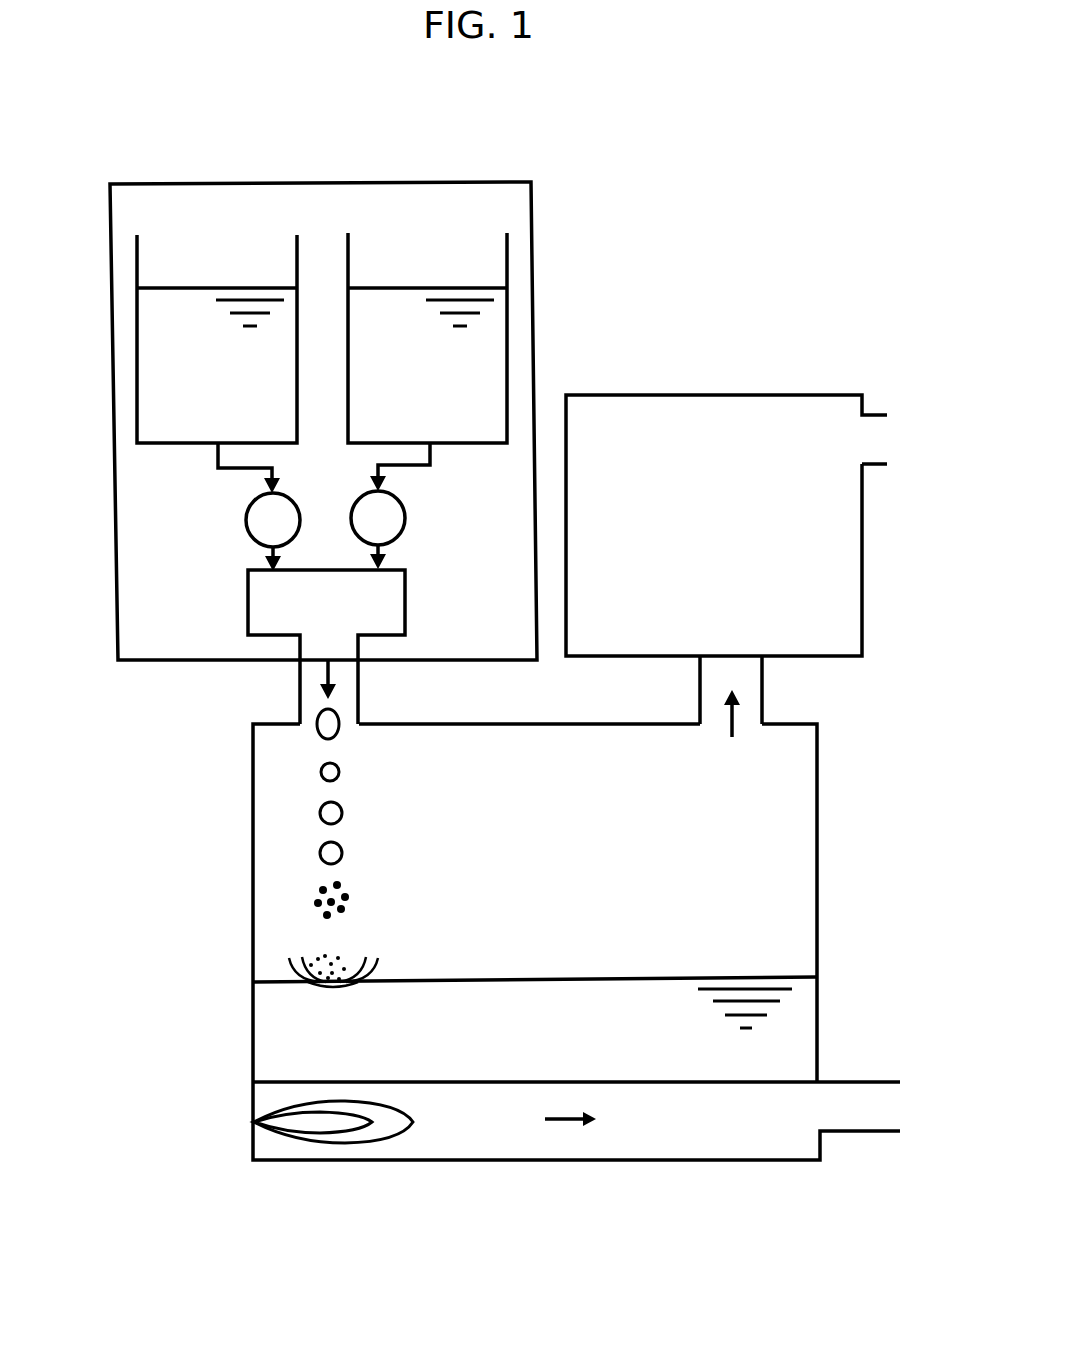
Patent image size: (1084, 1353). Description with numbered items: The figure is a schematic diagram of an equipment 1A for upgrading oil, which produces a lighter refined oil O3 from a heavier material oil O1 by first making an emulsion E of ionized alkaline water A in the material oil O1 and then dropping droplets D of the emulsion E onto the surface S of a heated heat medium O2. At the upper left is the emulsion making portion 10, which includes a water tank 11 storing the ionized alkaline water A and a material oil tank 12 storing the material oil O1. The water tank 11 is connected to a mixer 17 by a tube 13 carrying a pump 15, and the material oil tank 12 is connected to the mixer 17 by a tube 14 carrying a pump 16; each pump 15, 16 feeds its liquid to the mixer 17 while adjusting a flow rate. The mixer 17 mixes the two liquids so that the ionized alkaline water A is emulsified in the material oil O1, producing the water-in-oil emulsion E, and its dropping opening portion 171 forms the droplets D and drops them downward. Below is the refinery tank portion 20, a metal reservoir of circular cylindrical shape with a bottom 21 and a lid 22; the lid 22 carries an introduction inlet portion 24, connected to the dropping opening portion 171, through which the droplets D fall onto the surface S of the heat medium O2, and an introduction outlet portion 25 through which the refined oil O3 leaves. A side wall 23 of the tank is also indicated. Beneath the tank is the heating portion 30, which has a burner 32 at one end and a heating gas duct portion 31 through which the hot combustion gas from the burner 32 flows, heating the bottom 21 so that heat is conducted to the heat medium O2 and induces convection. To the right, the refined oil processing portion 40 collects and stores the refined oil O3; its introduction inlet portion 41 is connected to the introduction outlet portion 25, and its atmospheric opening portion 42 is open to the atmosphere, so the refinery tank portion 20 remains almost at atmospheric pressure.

The equipment for upgrading oil 1A is at (738, 137).
The emulsion making portion 10 is at (465, 181).
The water tank 11 is at (135, 268).
The material oil tank 12 is at (506, 262).
The tube 13 is at (215, 455).
The tube 14 is at (435, 458).
The pump 15 is at (246, 521).
The pump 16 is at (407, 520).
The mixer 17 is at (407, 585).
The dropping opening portion 171 is at (340, 661).
The refinery tank portion 20 is at (244, 845).
The bottom 21 is at (793, 1078).
The lid 22 is at (456, 722).
The tank side wall 23 is at (817, 857).
The introduction inlet portion 24 is at (313, 692).
The introduction outlet portion 25 is at (745, 685).
The heating portion 30 is at (246, 1105).
The heating gas duct portion 31 is at (718, 1162).
The burner 32 is at (302, 1125).
The refined oil processing portion 40 is at (745, 383).
The introduction inlet portion 41 is at (730, 657).
The atmospheric opening portion 42 is at (880, 442).
The ionized alkaline water A is at (153, 398).
The material oil O1 is at (490, 360).
The emulsion E is at (263, 610).
The droplets D is at (338, 728).
The surface S is at (552, 977).
The heat medium O2 is at (275, 1033).
The refined oil O3 is at (732, 729).